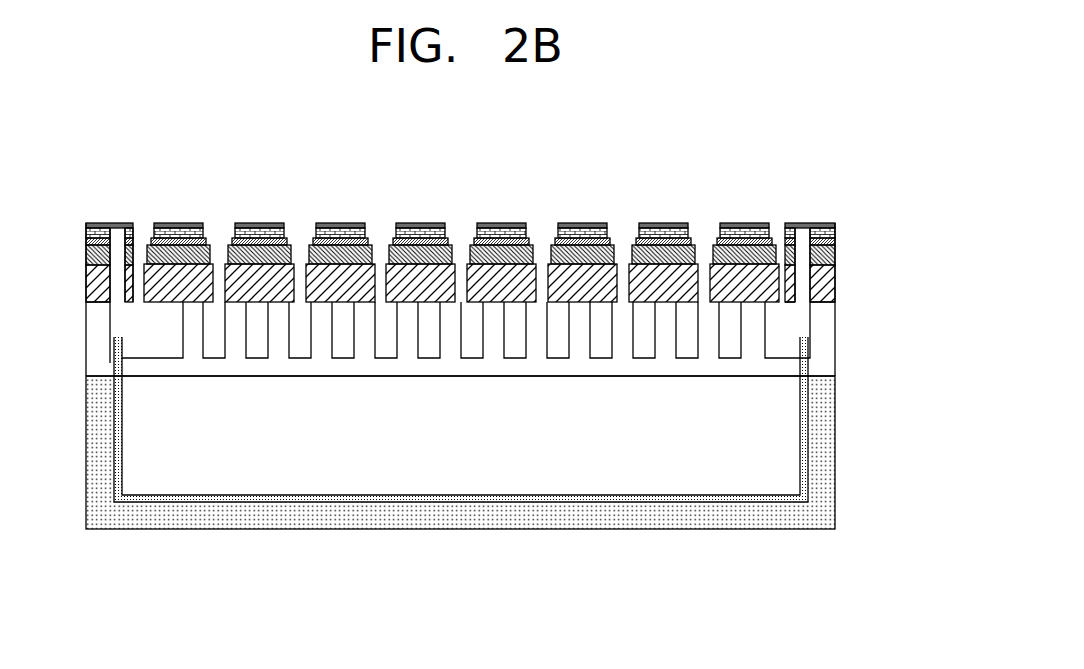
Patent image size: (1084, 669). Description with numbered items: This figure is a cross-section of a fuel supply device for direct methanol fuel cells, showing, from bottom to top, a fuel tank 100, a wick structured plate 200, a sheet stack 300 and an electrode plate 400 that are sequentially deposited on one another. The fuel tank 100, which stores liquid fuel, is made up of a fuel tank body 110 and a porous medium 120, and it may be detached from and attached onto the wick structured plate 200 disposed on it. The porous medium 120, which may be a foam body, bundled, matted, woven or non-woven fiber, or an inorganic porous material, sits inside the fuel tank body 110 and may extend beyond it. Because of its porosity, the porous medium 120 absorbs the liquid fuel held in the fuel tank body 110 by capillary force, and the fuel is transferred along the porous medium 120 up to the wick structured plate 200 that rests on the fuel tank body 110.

The fuel tank 100 is at (837, 440).
The fuel tank body 110 is at (690, 527).
The porous medium 120 is at (748, 500).
The wick structured plate 200 is at (837, 338).
The sheet stack 300 is at (847, 230).
The electrode plate 400 is at (837, 223).